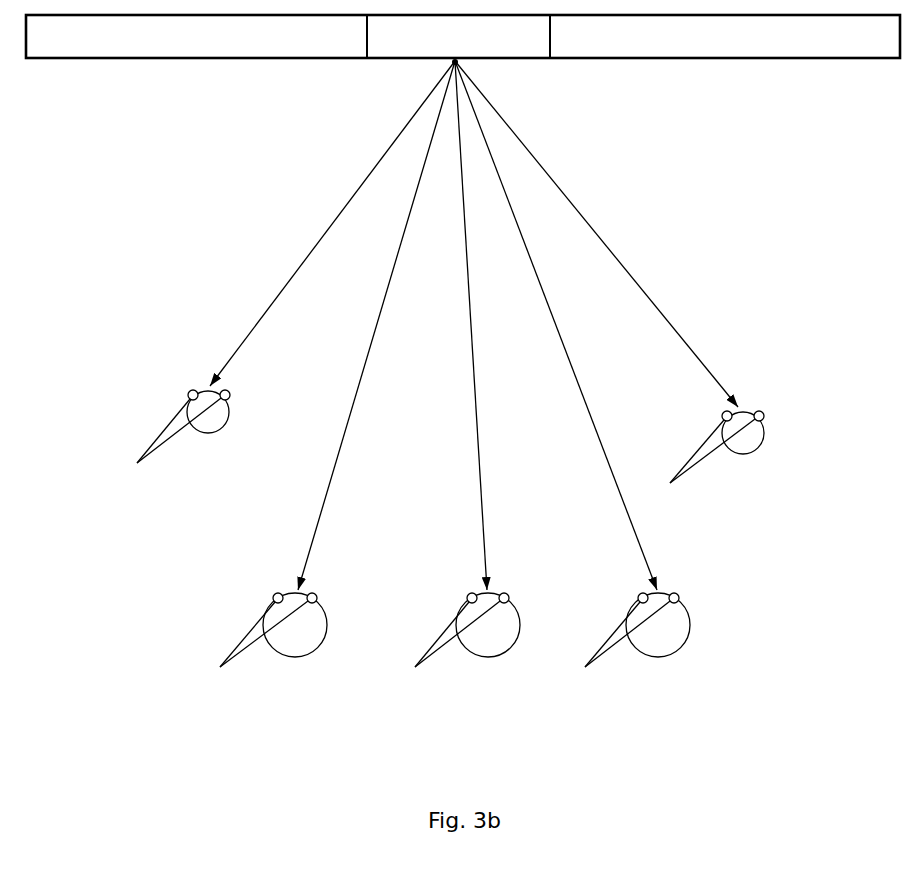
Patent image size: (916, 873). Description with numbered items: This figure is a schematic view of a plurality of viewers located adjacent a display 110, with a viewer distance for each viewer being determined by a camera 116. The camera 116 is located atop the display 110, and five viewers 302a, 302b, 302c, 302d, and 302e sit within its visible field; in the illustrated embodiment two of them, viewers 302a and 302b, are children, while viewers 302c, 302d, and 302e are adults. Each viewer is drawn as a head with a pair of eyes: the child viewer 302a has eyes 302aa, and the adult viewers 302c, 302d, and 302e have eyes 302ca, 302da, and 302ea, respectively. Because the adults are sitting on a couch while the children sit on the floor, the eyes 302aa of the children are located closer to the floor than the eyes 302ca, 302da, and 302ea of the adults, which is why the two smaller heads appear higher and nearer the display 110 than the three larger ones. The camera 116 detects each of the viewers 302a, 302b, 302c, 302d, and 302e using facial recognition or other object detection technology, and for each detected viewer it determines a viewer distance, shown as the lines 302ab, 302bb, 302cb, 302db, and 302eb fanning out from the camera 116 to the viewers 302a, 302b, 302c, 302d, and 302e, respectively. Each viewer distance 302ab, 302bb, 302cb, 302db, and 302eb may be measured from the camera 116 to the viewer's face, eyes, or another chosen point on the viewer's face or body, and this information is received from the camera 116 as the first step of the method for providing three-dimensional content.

The camera 116 is at (537, 50).
The display 110 is at (873, 50).
The viewer 302a is at (231, 412).
The viewer 302b is at (765, 432).
The viewer 302c is at (327, 621).
The viewer 302d is at (519, 622).
The viewer 302e is at (690, 624).
The pair of eyes 302aa is at (429, 450).
The pair of eyes 302ca is at (249, 644).
The pair of eyes 302da is at (442, 644).
The pair of eyes 302ea is at (612, 644).
The viewer distance 302ab is at (262, 315).
The viewer distance 302bb is at (657, 303).
The viewer distance 302cb is at (327, 400).
The viewer distance 302db is at (477, 465).
The viewer distance 302eb is at (583, 390).